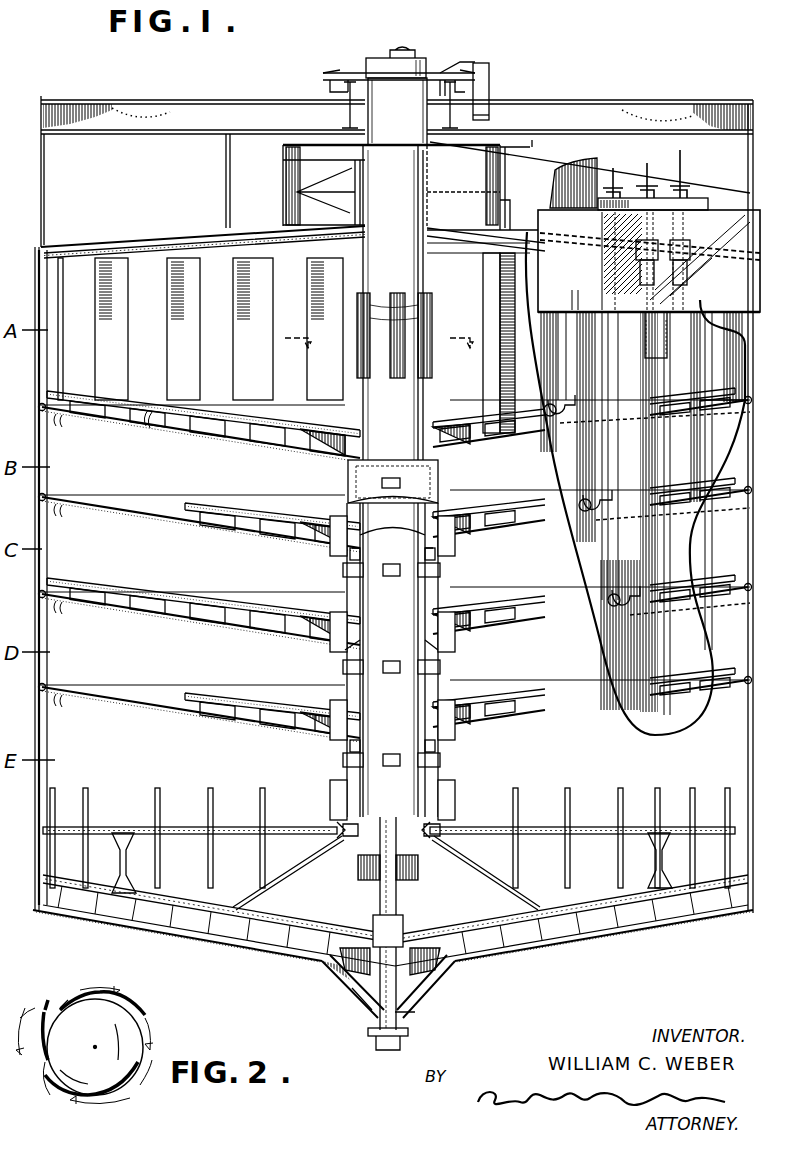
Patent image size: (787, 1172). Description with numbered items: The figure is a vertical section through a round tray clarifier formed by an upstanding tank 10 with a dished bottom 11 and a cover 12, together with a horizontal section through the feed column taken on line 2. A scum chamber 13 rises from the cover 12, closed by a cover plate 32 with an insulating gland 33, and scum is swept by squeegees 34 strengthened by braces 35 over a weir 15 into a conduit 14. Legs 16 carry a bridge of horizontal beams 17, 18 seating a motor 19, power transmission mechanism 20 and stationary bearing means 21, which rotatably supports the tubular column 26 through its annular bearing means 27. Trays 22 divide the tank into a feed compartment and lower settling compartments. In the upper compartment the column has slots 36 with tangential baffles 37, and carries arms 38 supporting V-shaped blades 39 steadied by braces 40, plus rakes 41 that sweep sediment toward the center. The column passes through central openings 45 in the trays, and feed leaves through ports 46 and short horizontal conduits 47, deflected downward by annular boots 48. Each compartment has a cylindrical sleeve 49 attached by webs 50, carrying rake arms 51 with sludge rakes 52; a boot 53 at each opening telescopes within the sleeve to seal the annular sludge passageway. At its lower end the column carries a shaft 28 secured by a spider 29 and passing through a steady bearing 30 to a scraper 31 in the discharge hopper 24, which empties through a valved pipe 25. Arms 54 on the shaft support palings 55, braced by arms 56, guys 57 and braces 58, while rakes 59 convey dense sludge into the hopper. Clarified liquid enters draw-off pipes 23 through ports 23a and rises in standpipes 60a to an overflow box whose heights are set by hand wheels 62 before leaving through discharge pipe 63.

In FIG. 1, the tank 10 is at (36, 375).
In FIG. 1, the bottom 11 is at (590, 940).
In FIG. 1, the cover 12 is at (148, 240).
In FIG. 1, the scum chamber 13 is at (295, 186).
In FIG. 1, the launder or conduit 14 is at (585, 175).
In FIG. 1, the weir 15 is at (504, 190).
In FIG. 1, the legs 16 is at (42, 196).
In FIG. 1, the horizontal beams 17 is at (575, 105).
In FIG. 1, the horizontal beams 18 is at (345, 114).
In FIG. 1, the motor 19 is at (452, 60).
In FIG. 1, the power transmission mechanism 20 is at (490, 65).
In FIG. 1, the stationary bearing means 21 is at (322, 83).
In FIG. 1, the trays or partitions 22 is at (232, 438).
In FIG. 1, the clarified liquid draw-off pipes 23 is at (722, 415).
In FIG. 1, the openings or ports 23a is at (58, 417).
In FIG. 1, the sludge discharge hopper 24 is at (430, 990).
In FIG. 1, the valved pipe 25 is at (368, 1046).
In FIG. 1, the tubular column 26 is at (424, 275).
In FIG. 1, the annular bearing means 27 is at (354, 70).
In FIG. 1, the shaft 28 is at (400, 890).
In FIG. 1, the spider 29 is at (358, 868).
In FIG. 1, the steady bearing 30 is at (325, 975).
In FIG. 1, the plow or scraper 31 is at (352, 1010).
In FIG. 1, the cover plate 32 is at (292, 148).
In FIG. 1, the insulating gland or ring 33 is at (388, 142).
In FIG. 1, the scum scrapers or squeegees 34 is at (300, 170).
In FIG. 1, the braces 35 is at (310, 196).
In FIG. 1, the slots 36 is at (407, 308).
In FIG. 2, the slots 36 is at (52, 1015).
In FIG. 1, the baffles 37 is at (412, 328).
In FIG. 2, the baffles 37 is at (143, 1016).
In FIG. 1, the arms 38 is at (444, 425).
In FIG. 1, the blades or paddles 39 is at (236, 343).
In FIG. 1, the braces 40 is at (158, 258).
In FIG. 1, the sludge scrapers or rakes 41 is at (175, 428).
In FIG. 1, the central openings 45 is at (424, 556).
In FIG. 1, the ports 46 is at (390, 462).
In FIG. 1, the horizontal conduit 47 is at (456, 572).
In FIG. 1, the annular boots or baffles 48 is at (455, 470).
In FIG. 1, the cylindrical sleeve or section 49 is at (348, 496).
In FIG. 1, the webs 50 is at (345, 630).
In FIG. 1, the rake arms 51 is at (268, 505).
In FIG. 1, the sludge rakes or scrapers 52 is at (240, 530).
In FIG. 1, the baffle or boot 53 is at (360, 558).
In FIG. 1, the arms 54 is at (288, 920).
In FIG. 1, the palings or stirrers 55 is at (208, 792).
In FIG. 1, the arms 56 is at (236, 826).
In FIG. 1, the guys 57 is at (300, 862).
In FIG. 1, the braces 58 is at (130, 868).
In FIG. 1, the rakes or scrapers 59 is at (190, 927).
In FIG. 1, the vertical riser or standpipe 60a is at (572, 386).
In FIG. 1, the hand wheels 62 is at (671, 190).
In FIG. 1, the discharge pipe 63 is at (668, 310).
In FIG. 1, the section line 2 is at (377, 354).